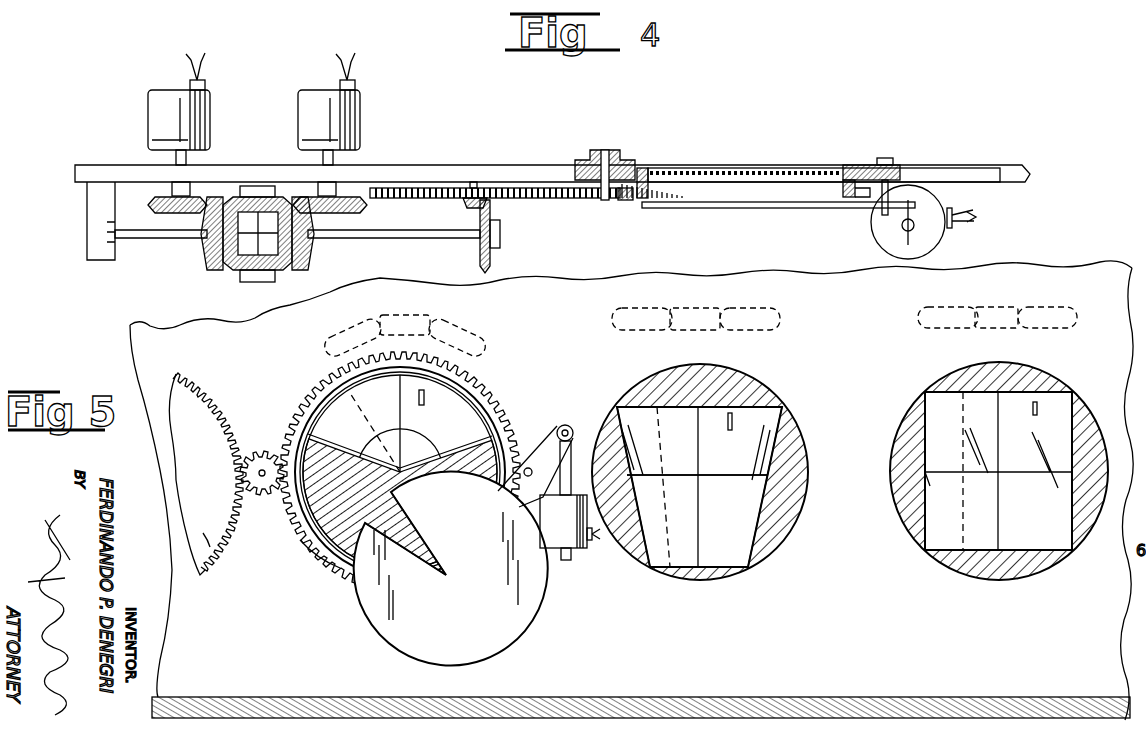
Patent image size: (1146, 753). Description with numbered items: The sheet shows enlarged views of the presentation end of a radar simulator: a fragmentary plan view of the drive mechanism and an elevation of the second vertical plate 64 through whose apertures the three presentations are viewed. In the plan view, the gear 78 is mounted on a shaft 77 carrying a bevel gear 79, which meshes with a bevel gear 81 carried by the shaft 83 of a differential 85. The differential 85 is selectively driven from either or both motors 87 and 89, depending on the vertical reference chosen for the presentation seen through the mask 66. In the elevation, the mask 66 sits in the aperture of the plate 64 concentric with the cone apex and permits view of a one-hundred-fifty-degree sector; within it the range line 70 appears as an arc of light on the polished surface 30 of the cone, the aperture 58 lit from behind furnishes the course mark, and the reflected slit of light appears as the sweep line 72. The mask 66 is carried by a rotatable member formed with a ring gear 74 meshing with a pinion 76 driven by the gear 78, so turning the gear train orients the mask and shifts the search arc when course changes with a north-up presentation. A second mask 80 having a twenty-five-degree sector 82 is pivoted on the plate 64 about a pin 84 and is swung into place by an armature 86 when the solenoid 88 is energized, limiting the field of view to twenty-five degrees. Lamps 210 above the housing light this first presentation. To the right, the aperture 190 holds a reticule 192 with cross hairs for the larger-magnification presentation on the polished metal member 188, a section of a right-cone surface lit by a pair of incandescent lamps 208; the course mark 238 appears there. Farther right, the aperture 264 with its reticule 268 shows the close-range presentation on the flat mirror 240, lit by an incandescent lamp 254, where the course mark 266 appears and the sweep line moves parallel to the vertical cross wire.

In FIG. 5, the polished surface 30 is at (330, 415).
In FIG. 5, the aperture 58 is at (426, 396).
In FIG. 5, the second vertical plate 64 is at (128, 325).
In FIG. 4, the mask 66 is at (685, 172).
In FIG. 5, the mask 66 is at (312, 565).
In FIG. 5, the range line 70 is at (490, 410).
In FIG. 5, the sweep line 72 is at (396, 400).
In FIG. 4, the ring gear 74 is at (641, 200).
In FIG. 5, the ring gear 74 is at (292, 430).
In FIG. 4, the pinion 76 is at (600, 198).
In FIG. 5, the pinion 76 is at (262, 498).
In FIG. 4, the shaft 77 is at (473, 185).
In FIG. 4, the gear 78 is at (540, 200).
In FIG. 5, the gear 78 is at (205, 560).
In FIG. 4, the bevel gear 79 is at (463, 204).
In FIG. 4, the second mask 80 is at (858, 210).
In FIG. 5, the second mask 80 is at (517, 632).
In FIG. 4, the bevel gear 81 is at (492, 265).
In FIG. 5, the sector 82 is at (425, 568).
In FIG. 4, the shaft 83 is at (372, 242).
In FIG. 5, the pin 84 is at (553, 446).
In FIG. 4, the differential 85 is at (220, 279).
In FIG. 5, the armature 86 is at (566, 562).
In FIG. 4, the motor 87 is at (212, 118).
In FIG. 4, the solenoid 88 is at (932, 235).
In FIG. 5, the solenoid 88 is at (592, 541).
In FIG. 4, the motor 89 is at (362, 118).
In FIG. 5, the metal member 188 is at (733, 560).
In FIG. 5, the aperture 190 is at (770, 548).
In FIG. 5, the reticule 192 is at (748, 477).
In FIG. 5, the incandescent lamps 208 is at (630, 311).
In FIG. 5, the lamps 210 is at (355, 322).
In FIG. 5, the course mark 238 is at (735, 420).
In FIG. 5, the flat mirror 240 is at (937, 413).
In FIG. 5, the incandescent lamp 254 is at (1040, 305).
In FIG. 5, the aperture 264 is at (1035, 578).
In FIG. 5, the course mark 266 is at (1040, 405).
In FIG. 5, the reticule 268 is at (925, 535).